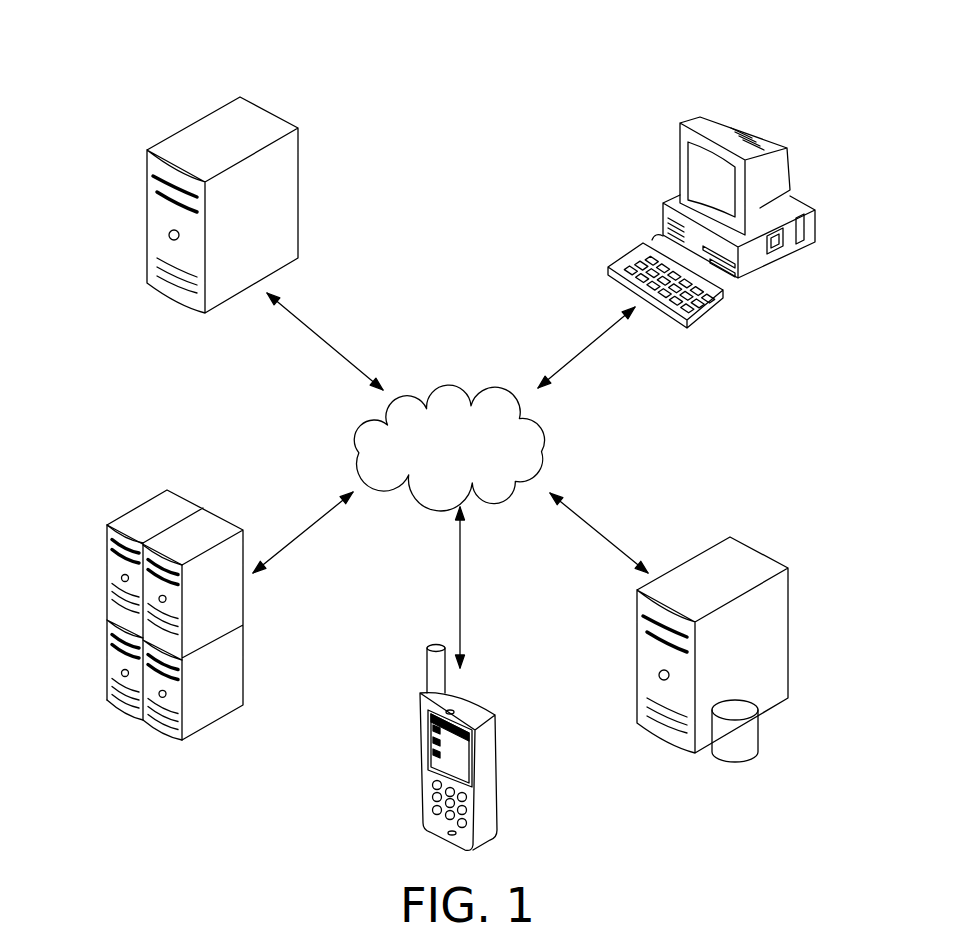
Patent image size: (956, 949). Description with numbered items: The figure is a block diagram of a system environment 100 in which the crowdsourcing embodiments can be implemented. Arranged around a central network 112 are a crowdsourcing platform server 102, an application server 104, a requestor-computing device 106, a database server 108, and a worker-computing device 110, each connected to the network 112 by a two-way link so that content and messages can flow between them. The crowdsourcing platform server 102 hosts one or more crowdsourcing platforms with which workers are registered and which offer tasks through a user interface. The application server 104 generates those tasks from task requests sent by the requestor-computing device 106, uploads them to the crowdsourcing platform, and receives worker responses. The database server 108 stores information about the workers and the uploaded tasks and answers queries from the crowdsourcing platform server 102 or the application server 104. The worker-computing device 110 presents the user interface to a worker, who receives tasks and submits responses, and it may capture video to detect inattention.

The system environment 100 is at (450, 72).
The crowdsourcing platform server 102 is at (107, 613).
The application server 104 is at (195, 122).
The requestor-computing device 106 is at (792, 158).
The database server 108 is at (713, 547).
The worker-computing device 110 is at (418, 733).
The network 112 is at (453, 380).